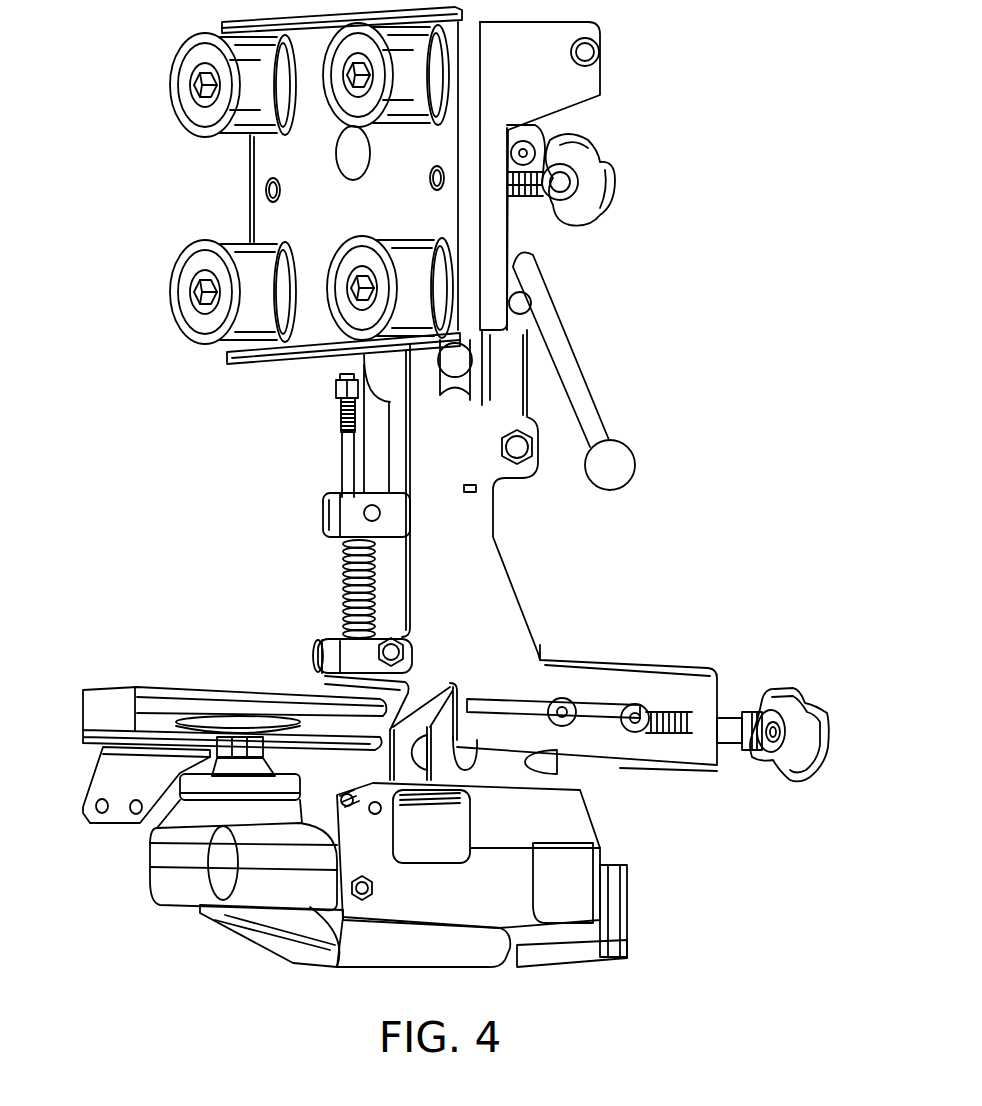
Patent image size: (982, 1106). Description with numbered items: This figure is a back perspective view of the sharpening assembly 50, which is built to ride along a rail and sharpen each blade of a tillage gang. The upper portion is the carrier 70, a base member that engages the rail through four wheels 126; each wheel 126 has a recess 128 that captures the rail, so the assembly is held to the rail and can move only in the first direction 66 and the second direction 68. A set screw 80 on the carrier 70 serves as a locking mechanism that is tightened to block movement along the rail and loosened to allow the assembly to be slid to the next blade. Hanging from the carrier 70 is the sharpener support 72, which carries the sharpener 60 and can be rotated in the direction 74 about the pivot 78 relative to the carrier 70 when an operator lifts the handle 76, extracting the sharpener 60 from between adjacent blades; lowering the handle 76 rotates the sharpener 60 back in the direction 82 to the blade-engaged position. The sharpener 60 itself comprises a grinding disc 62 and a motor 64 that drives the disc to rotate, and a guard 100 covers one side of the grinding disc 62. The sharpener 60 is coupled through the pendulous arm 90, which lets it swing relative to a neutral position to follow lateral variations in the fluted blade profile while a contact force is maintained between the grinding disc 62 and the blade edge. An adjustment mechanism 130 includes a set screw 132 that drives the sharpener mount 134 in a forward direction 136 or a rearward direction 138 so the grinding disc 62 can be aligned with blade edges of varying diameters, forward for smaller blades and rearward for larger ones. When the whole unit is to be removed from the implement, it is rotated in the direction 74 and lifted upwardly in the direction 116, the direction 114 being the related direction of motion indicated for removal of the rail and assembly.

The sharpening assembly 50 is at (445, 504).
The sharpener 60 is at (407, 819).
The grinding disc 62 is at (202, 703).
The motor 64 is at (395, 962).
The first direction 66 is at (125, 187).
The second direction 68 is at (680, 187).
The carrier 70 is at (565, 85).
The sharpener support 72 is at (520, 598).
The direction 74 is at (705, 445).
The handle 76 is at (573, 363).
The pivot 78 is at (445, 372).
The set screw 80 is at (525, 195).
The direction 82 is at (772, 948).
The pendulous arm 90 is at (560, 522).
The guard 100 is at (103, 690).
The direction 114 is at (128, 346).
The direction 116 is at (128, 40).
The wheels 126 is at (336, 103).
The recess 128 is at (243, 118).
The adjustment mechanism 130 is at (636, 636).
The set screw 132 is at (786, 692).
The sharpener mount 134 is at (578, 816).
The forward direction 136 is at (80, 860).
The rearward direction 138 is at (696, 835).